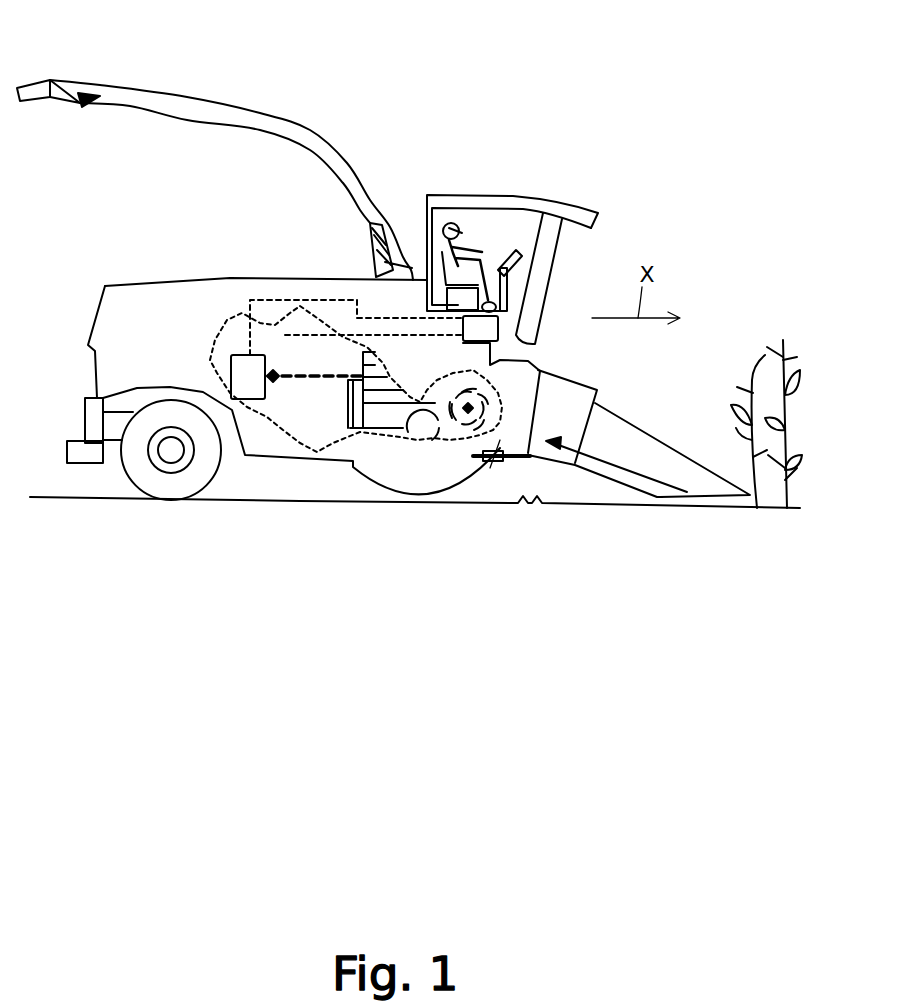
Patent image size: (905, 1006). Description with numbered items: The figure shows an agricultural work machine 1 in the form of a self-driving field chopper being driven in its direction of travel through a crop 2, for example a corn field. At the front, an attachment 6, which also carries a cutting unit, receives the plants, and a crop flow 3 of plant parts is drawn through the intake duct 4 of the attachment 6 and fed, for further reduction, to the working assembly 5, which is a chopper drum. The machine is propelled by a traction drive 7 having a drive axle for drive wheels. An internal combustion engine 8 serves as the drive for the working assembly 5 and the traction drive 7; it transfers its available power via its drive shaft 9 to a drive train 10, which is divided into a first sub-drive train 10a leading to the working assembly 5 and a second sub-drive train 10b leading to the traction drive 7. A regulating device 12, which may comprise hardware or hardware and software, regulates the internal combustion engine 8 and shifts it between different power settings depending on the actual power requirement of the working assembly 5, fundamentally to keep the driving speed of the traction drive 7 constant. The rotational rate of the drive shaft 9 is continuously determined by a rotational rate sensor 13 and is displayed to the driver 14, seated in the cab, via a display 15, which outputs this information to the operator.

The agricultural work machine 1 is at (673, 102).
The crop 2 is at (750, 342).
The crop flow 3 is at (628, 465).
The intake duct 4 is at (663, 463).
The working assembly 5 is at (477, 425).
The attachment 6 is at (605, 488).
The traction drive 7 is at (415, 440).
The internal combustion engine 8 is at (231, 380).
The drive shaft 9 is at (284, 336).
The drive train 10 is at (310, 358).
The first sub-drive train 10a is at (376, 405).
The second sub-drive train 10b is at (335, 382).
The regulating device 12 is at (500, 325).
The rotational rate sensor 13 is at (270, 372).
The driver 14 is at (451, 222).
The display 15 is at (512, 248).